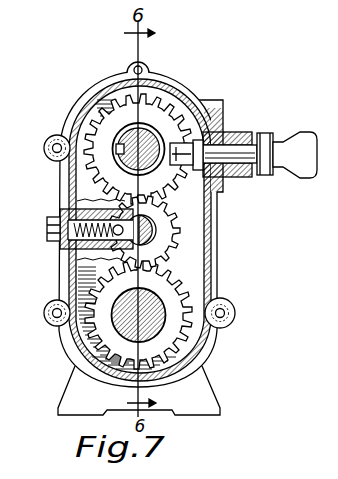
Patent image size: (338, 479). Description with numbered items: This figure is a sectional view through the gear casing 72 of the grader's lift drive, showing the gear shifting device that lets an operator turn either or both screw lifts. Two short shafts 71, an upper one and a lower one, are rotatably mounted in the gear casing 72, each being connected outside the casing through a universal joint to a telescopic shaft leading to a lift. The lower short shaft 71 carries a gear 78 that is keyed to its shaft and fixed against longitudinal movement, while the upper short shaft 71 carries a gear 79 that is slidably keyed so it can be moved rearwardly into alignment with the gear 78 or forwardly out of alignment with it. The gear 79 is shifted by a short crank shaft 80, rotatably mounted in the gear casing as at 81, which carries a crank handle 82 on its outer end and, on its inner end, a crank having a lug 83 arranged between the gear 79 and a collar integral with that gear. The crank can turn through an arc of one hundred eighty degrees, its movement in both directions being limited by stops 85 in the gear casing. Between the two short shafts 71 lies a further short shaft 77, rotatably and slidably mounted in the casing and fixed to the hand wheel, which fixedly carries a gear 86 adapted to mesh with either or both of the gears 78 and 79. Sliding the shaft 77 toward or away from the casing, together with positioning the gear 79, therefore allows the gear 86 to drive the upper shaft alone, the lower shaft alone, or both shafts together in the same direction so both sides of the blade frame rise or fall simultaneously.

The short shaft 71 is at (153, 123).
The gear casing 72 is at (200, 360).
The short shaft 77 is at (158, 232).
The gear 78 is at (187, 298).
The gear 79 is at (102, 121).
The crank shaft 80 is at (237, 148).
The mounting of crank shaft 81 is at (225, 137).
The crank handle 82 is at (290, 156).
The lug 83 is at (178, 145).
The stops 85 is at (200, 176).
The gear 86 is at (165, 243).